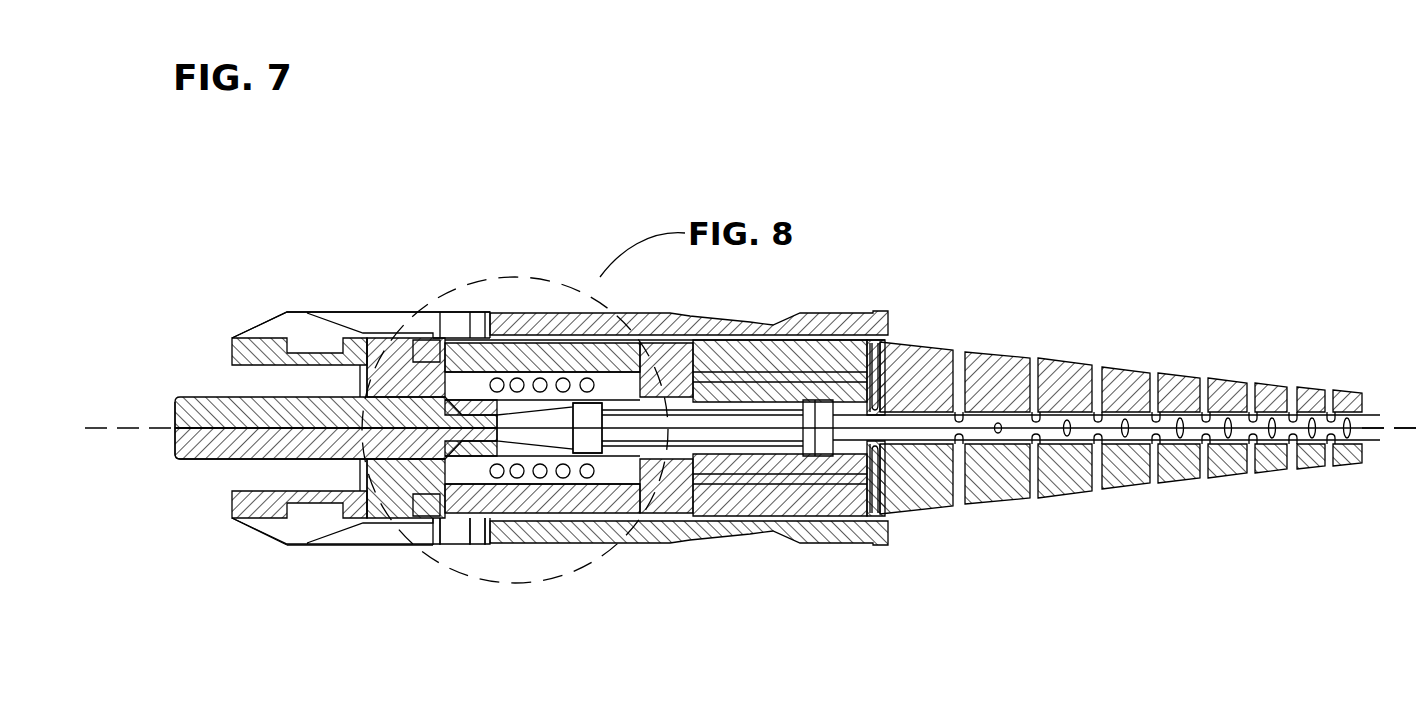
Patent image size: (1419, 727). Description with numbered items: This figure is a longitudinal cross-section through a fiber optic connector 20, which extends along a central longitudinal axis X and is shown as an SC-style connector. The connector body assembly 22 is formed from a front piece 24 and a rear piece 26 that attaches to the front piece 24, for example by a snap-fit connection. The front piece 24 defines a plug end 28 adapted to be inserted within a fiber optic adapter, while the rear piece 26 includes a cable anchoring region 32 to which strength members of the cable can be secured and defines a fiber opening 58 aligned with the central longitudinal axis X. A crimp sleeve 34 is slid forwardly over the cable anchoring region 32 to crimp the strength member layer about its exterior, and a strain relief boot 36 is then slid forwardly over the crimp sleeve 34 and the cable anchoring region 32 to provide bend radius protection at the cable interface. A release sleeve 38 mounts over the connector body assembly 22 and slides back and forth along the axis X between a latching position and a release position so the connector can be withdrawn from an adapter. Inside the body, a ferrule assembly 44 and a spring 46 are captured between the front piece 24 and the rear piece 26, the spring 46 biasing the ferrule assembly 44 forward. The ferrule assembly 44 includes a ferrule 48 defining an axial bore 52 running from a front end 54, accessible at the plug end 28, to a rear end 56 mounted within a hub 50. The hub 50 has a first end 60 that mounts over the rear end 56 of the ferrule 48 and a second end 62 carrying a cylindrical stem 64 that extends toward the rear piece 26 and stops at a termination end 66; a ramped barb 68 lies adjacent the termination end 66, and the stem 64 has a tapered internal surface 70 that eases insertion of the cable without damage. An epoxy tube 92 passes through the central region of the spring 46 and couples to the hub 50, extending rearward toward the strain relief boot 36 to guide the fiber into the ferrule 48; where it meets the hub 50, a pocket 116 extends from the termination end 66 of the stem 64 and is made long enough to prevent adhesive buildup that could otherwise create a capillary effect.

The fiber optic connector 20 is at (970, 193).
The connector body assembly 22 is at (272, 338).
The front piece 24 is at (275, 517).
The rear piece 26 is at (780, 390).
The plug end 28 is at (232, 358).
The cable anchoring region 32 is at (763, 465).
The crimp sleeve 34 is at (773, 478).
The strain relief boot 36 is at (1070, 352).
The release sleeve 38 is at (370, 547).
The ferrule assembly 44 is at (440, 492).
The spring 46 is at (545, 482).
The ferrule 48 is at (200, 462).
The hub 50 is at (400, 342).
The axial bore 52 is at (172, 430).
The front end 54 is at (175, 410).
The rear end 56 is at (470, 485).
The fiber opening 58 is at (840, 447).
The first end 60 is at (353, 338).
The second end 62 is at (604, 488).
The stem 64 is at (528, 398).
The termination end 66 is at (645, 345).
The barb 68 is at (548, 484).
The internal surface 70 is at (470, 398).
The epoxy tube 92 is at (833, 410).
The pocket 116 is at (660, 515).
The central longitudinal axis X is at (1410, 428).